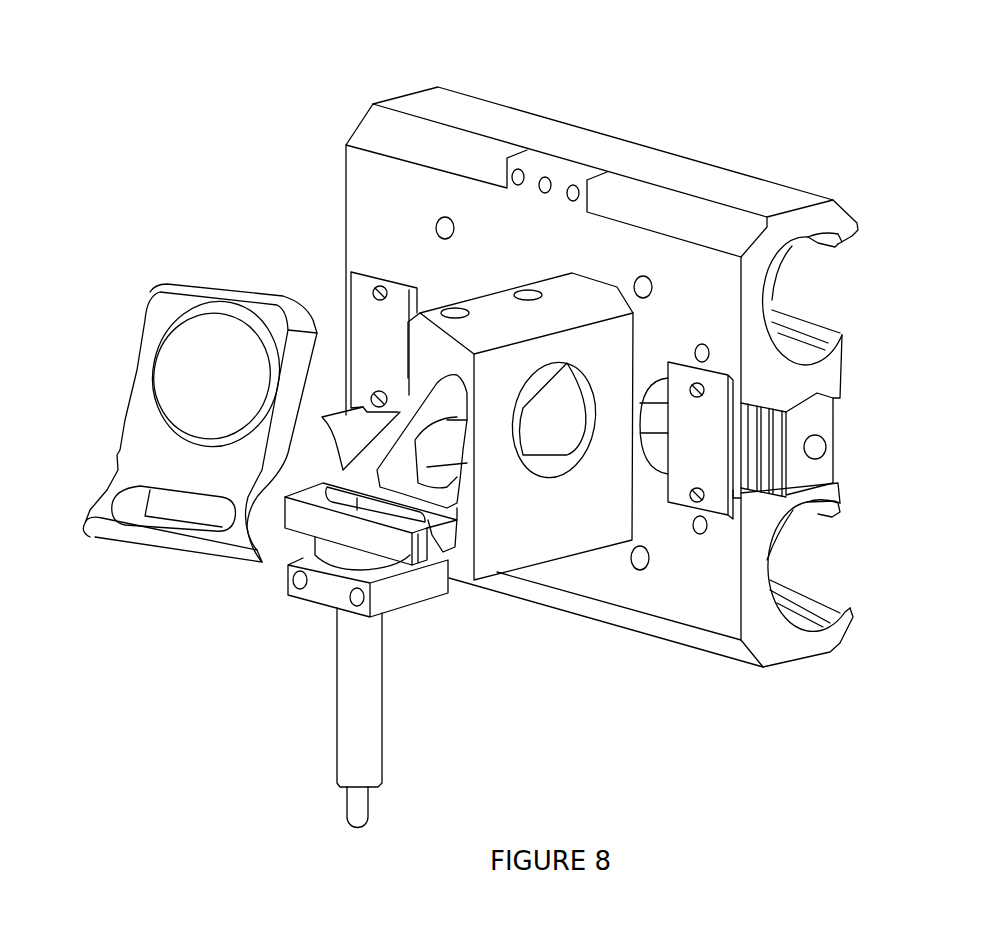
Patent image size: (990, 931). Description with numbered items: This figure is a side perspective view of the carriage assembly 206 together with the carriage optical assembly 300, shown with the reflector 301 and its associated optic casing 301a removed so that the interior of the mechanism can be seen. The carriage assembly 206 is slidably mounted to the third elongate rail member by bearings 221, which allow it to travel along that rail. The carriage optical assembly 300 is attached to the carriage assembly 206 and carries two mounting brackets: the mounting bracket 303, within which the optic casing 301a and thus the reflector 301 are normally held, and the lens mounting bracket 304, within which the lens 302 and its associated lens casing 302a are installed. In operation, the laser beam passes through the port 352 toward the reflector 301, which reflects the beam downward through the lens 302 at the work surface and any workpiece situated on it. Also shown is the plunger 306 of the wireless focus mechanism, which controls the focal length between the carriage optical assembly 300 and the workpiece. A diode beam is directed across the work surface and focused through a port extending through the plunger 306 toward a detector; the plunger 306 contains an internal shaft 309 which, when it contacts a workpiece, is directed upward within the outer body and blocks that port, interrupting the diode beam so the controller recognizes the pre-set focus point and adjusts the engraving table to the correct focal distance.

The carriage assembly 206 is at (686, 220).
The bearings 221 is at (840, 243).
The carriage optical assembly 300 is at (543, 547).
The reflector 301 is at (193, 367).
The optic casing 301a is at (102, 522).
The lens 302 is at (457, 483).
The lens casing 302a is at (297, 528).
The mounting bracket 303 is at (402, 408).
The lens mounting bracket 304 is at (450, 540).
The plunger 306 is at (367, 717).
The internal shaft 309 is at (358, 805).
The port 352 is at (593, 398).